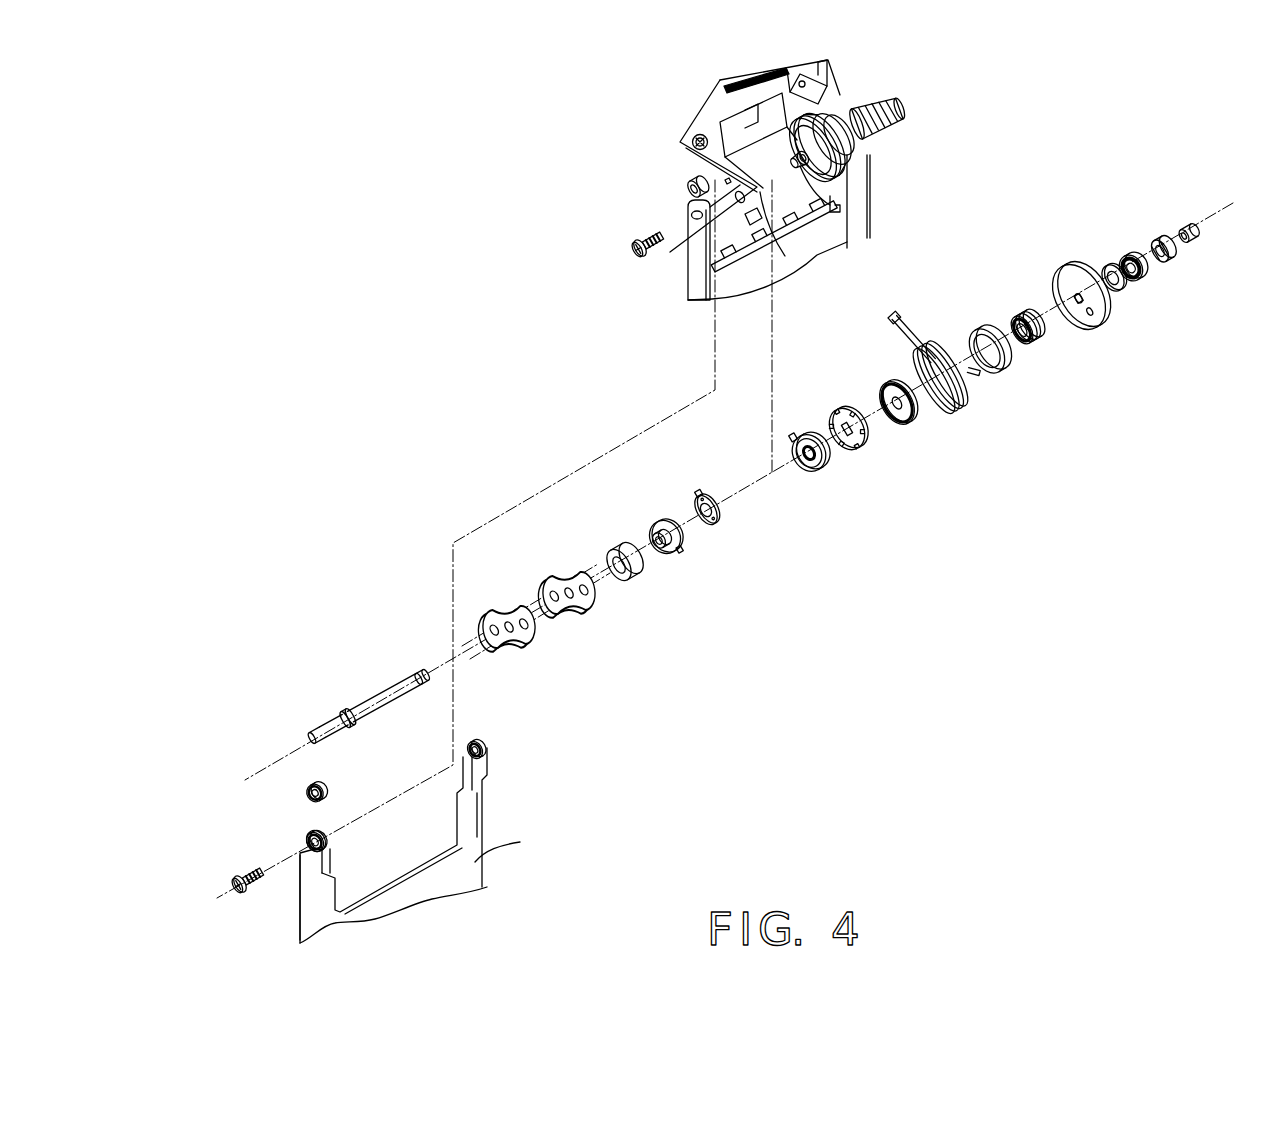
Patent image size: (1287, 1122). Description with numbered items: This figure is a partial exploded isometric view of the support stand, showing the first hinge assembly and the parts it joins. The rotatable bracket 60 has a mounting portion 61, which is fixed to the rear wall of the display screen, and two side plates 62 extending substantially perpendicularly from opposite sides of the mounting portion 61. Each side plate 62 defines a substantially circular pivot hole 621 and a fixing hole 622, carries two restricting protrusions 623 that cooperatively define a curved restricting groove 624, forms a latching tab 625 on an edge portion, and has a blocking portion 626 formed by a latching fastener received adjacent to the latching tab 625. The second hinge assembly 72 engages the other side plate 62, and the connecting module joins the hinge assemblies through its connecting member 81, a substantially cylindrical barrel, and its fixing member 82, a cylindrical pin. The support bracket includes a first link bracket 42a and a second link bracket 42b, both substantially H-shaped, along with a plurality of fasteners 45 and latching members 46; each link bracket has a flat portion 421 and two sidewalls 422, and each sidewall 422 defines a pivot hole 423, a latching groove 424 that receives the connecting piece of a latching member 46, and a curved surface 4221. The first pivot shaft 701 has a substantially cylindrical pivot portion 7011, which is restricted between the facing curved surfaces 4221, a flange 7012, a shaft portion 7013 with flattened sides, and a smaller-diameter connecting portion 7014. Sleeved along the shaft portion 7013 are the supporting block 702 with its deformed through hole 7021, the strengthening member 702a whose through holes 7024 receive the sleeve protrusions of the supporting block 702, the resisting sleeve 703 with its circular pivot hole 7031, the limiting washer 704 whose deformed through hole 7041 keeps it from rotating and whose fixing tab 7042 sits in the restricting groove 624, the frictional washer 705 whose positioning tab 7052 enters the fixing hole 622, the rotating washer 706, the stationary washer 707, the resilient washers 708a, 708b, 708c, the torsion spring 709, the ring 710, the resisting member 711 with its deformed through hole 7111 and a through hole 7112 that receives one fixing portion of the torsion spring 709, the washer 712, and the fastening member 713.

The first link bracket 42a is at (522, 802).
The second link bracket 42b is at (903, 238).
The fasteners 45 is at (232, 877).
The latching members 46 is at (305, 795).
The rotatable bracket 60 is at (617, 82).
The mounting portion 61 is at (713, 110).
The side plates 62 is at (690, 148).
The pivot hole 621 is at (700, 201).
The fixing hole 622 is at (730, 177).
The restricting protrusions 623 is at (696, 217).
The restricting groove 624 is at (772, 213).
The latching tab 625 is at (845, 90).
The blocking portion 626 is at (812, 80).
The second hinge assembly 72 is at (873, 153).
The connecting member 81 is at (1195, 235).
The fixing member 82 is at (840, 205).
The flat portion 421 is at (477, 860).
The curved surface 4221 is at (477, 713).
The sidewalls 422 is at (310, 900).
The pivot hole 423 is at (306, 838).
The latching groove 424 is at (320, 830).
The first pivot shaft 701 is at (372, 725).
The pivot portion 7011 is at (317, 732).
The flange 7012 is at (345, 712).
The shaft portion 7013 is at (383, 690).
The connecting portion 7014 is at (417, 670).
The supporting block 702 is at (518, 642).
The deformed through hole 7021 is at (492, 613).
The strengthening member 702a is at (583, 603).
The through holes 7024 is at (543, 583).
The resisting sleeve 703 is at (633, 567).
The pivot hole 7031 is at (612, 555).
The limiting washer 704 is at (677, 538).
The deformed through hole 7041 is at (657, 528).
The fixing tab 7042 is at (680, 550).
The frictional washer 705 is at (717, 517).
The positioning tab 7052 is at (702, 498).
The rotating washer 706 is at (813, 468).
The stationary washer 707 is at (848, 453).
The resilient washer 708a is at (900, 420).
The resilient washer 708b is at (1037, 337).
The resilient washer 708c is at (1137, 280).
The torsion spring 709 is at (955, 397).
The ring 710 is at (1003, 363).
The resisting member 711 is at (1080, 263).
The deformed through hole 7111 is at (1073, 293).
The through hole 7112 is at (1095, 312).
The washer 712 is at (1117, 290).
The fastening member 713 is at (1172, 262).